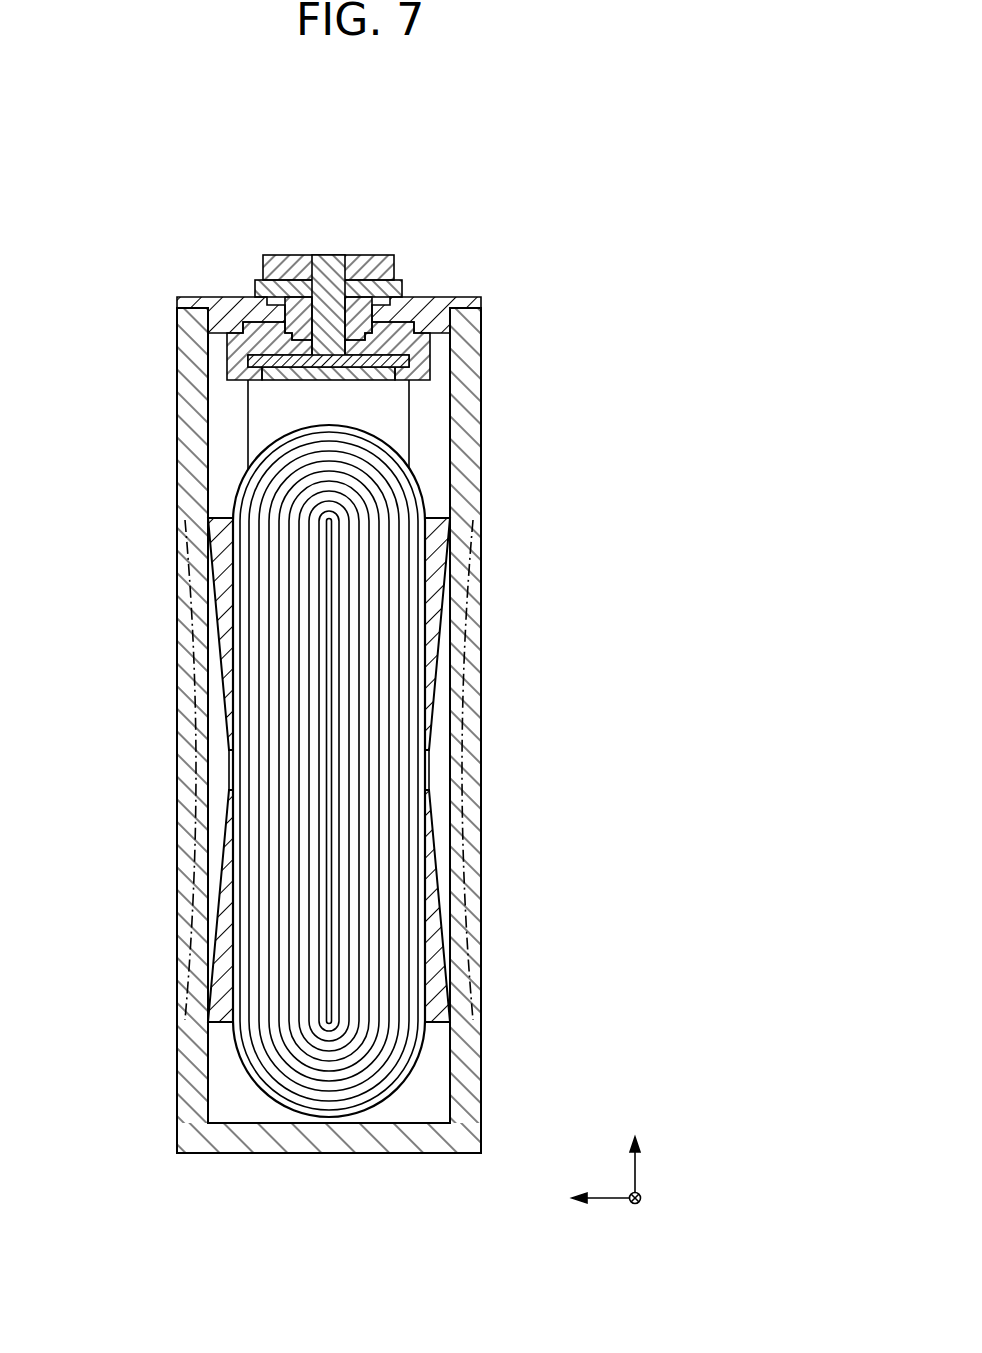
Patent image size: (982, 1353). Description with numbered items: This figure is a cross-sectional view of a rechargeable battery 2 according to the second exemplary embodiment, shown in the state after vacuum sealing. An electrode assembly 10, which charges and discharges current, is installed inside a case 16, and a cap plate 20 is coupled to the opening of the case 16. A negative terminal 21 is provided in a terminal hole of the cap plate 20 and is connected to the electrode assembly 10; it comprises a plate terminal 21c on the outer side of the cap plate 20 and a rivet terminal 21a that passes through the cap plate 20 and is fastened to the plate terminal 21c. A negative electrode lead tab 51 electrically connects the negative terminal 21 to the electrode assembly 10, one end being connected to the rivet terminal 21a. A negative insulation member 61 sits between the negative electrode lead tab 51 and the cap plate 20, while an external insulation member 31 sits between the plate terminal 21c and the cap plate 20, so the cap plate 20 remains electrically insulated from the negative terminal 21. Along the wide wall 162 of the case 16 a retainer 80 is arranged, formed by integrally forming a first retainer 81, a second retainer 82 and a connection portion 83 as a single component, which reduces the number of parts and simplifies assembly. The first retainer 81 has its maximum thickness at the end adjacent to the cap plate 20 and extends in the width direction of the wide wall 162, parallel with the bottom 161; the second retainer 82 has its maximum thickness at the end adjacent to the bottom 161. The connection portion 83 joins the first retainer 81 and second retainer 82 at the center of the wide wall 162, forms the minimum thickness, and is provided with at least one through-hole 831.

The rechargeable battery 2 is at (337, 118).
The electrode assembly 10 is at (300, 960).
The case 16 is at (690, 355).
The bottom 161 is at (355, 1195).
The wide wall 162 is at (466, 684).
The cap plate 20 is at (448, 318).
The negative terminal 21 is at (283, 223).
The rivet terminal 21a is at (328, 262).
The plate terminal 21c is at (413, 208).
The external insulation member 31 is at (402, 292).
The negative electrode lead tab 51 is at (253, 367).
The negative insulation member 61 is at (420, 370).
The retainer 80 is at (690, 242).
The first retainer 81 is at (437, 580).
The second retainer 82 is at (435, 943).
The connection portion 83 is at (427, 800).
The through-hole 831 is at (430, 770).